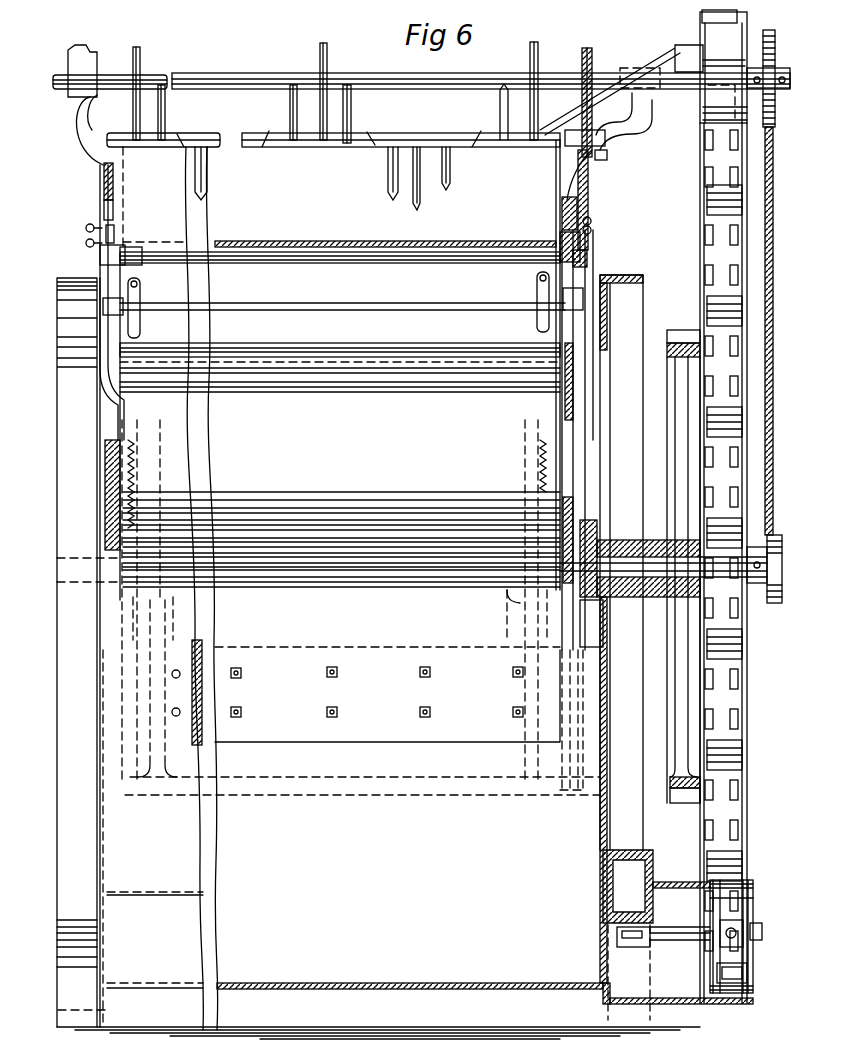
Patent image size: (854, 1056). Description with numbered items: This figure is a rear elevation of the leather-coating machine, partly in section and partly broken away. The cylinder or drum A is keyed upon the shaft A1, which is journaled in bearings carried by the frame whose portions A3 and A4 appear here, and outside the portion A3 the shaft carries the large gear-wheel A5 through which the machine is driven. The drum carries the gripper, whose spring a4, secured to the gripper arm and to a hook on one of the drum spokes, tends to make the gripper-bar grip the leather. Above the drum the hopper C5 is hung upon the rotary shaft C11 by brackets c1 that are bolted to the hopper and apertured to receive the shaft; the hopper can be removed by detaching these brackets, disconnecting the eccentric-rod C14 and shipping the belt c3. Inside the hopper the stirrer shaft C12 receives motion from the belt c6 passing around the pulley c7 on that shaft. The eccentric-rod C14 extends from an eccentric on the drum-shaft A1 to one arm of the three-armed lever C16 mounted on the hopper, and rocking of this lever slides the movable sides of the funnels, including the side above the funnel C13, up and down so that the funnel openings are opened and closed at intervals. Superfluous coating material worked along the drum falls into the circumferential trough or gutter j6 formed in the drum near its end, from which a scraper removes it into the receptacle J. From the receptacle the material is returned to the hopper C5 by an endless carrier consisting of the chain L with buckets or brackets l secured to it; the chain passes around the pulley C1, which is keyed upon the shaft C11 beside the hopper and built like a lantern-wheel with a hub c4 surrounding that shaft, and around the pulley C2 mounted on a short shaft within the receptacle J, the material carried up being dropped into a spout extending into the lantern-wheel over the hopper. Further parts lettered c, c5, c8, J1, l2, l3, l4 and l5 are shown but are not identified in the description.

The rotary shaft C11 is at (421, 70).
The stirrer shaft C12 is at (431, 138).
The pulley C2 is at (335, 126).
The pulley C1 is at (85, 105).
The hopper C5 is at (341, 365).
The funnel C13 is at (340, 271).
The lever c is at (141, 293).
The cylinder or drum A is at (340, 561).
The spring a4 is at (150, 470).
The frame portion A4 is at (88, 652).
The receptacle J is at (430, 810).
The frame bracket J1 is at (572, 738).
The frame portion A3 is at (641, 606).
The gear-wheel A5 is at (676, 386).
The shaft A1 is at (663, 558).
The trough or gutter j6 is at (578, 441).
The three-armed lever C16 is at (585, 225).
The eccentric-rod C14 is at (595, 263).
The belt c3 is at (591, 92).
The block c5 is at (595, 72).
The bar l5 is at (658, 62).
The brackets c1 is at (648, 117).
The hub c4 is at (597, 160).
The bolt rail l4 is at (770, 62).
The brackets l is at (745, 35).
The chain L is at (750, 475).
The lower sprocket l2 is at (753, 975).
The shaft l3 is at (663, 947).
The pulley c7 is at (778, 128).
The belt c6 is at (775, 160).
The pulley c8 is at (783, 587).